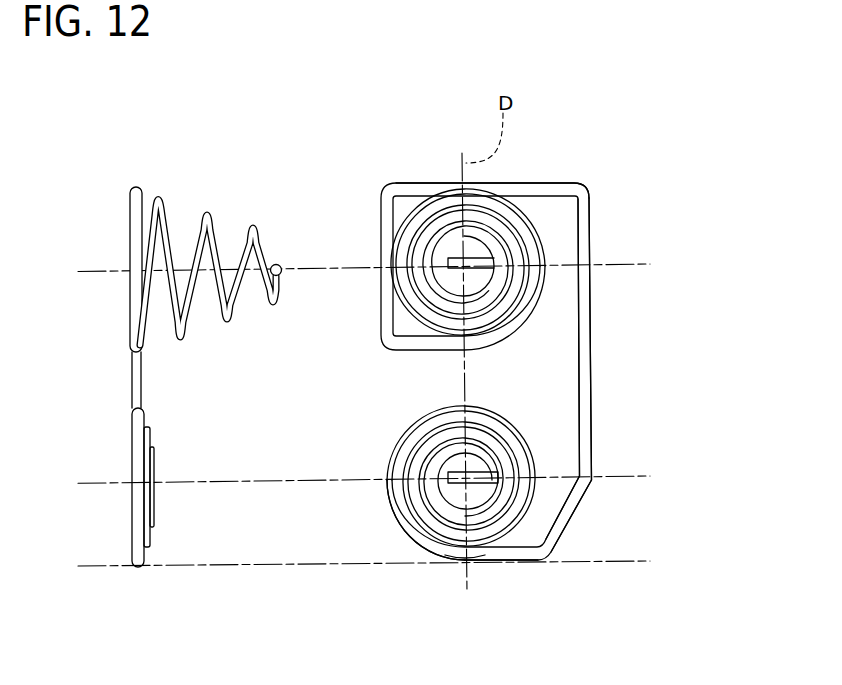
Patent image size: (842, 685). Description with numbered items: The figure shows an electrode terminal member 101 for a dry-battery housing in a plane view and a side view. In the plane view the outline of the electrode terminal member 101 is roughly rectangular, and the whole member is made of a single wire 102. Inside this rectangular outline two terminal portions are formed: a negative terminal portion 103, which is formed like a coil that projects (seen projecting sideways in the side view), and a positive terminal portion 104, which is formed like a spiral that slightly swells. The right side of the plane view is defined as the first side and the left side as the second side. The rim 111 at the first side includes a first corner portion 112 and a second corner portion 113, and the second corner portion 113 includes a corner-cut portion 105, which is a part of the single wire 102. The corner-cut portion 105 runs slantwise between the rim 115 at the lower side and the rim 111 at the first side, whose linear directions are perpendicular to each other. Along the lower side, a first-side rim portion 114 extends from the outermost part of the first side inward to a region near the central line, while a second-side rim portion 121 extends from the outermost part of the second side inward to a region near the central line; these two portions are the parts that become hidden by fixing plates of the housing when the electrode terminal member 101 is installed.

The electrode terminal member 101 is at (369, 365).
The single wire 102 is at (133, 377).
The negative terminal portion 103 is at (262, 248).
The positive terminal portion 104 is at (153, 505).
The corner-cut portion 105 is at (629, 514).
The rim 111 is at (592, 418).
The first corner portion 112 is at (588, 184).
The second corner portion 113 is at (574, 527).
The first-side rim portion 114 is at (600, 566).
The rim 115 is at (477, 557).
The second-side rim portion 121 is at (442, 568).